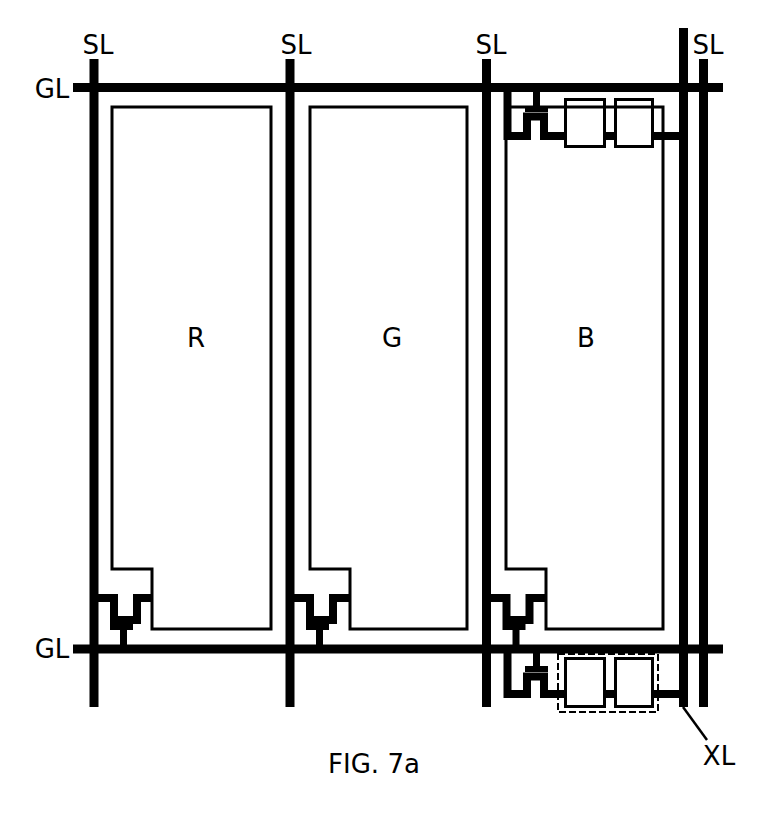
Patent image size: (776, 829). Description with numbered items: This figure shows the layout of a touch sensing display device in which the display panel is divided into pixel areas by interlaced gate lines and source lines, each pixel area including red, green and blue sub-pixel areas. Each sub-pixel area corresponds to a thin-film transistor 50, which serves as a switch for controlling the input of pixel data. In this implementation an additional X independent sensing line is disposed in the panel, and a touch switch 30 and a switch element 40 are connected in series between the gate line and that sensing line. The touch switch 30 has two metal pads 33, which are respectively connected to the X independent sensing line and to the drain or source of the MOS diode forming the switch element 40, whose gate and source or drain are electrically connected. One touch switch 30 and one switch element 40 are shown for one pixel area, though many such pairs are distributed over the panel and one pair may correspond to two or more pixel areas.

The touch switch 30 is at (619, 712).
The metal pads 33 is at (638, 692).
The switch element 40 is at (536, 703).
The thin-film transistor 50 is at (522, 590).